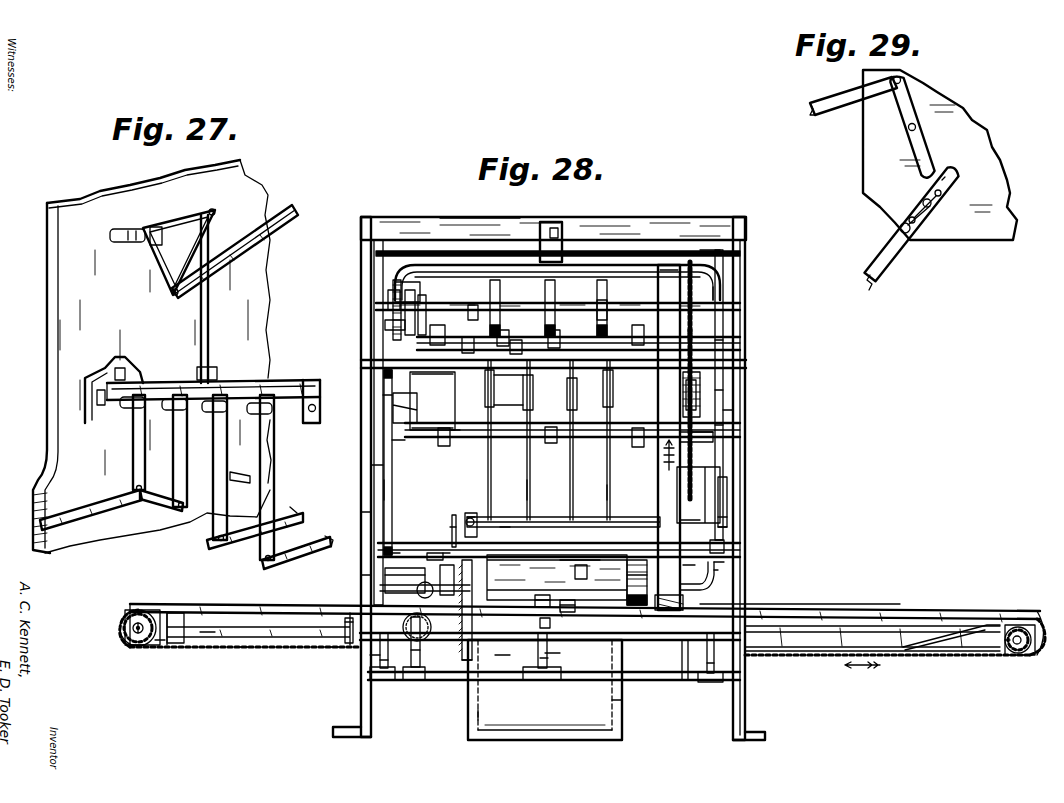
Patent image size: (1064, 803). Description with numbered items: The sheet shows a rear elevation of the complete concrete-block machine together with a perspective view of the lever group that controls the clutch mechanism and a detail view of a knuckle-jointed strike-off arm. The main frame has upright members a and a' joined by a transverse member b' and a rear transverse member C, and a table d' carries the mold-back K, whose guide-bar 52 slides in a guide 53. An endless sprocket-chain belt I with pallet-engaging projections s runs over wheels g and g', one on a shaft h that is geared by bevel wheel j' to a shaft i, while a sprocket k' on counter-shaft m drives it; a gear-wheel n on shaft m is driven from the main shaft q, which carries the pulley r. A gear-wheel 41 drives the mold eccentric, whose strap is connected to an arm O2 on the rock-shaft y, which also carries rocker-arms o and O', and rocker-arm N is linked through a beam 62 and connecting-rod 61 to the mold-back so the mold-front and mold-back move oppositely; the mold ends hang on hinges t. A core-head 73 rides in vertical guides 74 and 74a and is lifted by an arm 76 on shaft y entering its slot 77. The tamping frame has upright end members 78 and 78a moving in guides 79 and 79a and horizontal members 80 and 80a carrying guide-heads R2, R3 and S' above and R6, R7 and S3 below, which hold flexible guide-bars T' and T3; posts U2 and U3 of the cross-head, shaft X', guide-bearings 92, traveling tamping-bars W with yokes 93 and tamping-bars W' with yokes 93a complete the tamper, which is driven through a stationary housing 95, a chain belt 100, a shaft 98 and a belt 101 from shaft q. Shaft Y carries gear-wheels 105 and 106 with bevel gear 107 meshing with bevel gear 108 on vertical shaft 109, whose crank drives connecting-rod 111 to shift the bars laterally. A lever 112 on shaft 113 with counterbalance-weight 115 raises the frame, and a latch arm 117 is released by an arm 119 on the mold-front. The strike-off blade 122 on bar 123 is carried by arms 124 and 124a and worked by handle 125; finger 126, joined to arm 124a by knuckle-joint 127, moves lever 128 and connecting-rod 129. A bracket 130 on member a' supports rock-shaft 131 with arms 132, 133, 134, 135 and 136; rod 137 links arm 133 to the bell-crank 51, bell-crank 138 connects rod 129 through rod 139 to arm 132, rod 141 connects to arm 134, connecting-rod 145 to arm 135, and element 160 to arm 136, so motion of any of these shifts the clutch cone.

In FIG. 27, the upright main member a' is at (152, 356).
In FIG. 28, the upright main member a' is at (358, 348).
In FIG. 29, the upright main member a' is at (919, 155).
In FIG. 27, the bell-crank 138 is at (143, 257).
In FIG. 28, the bell-crank 138 is at (362, 517).
In FIG. 27, the connecting-rod 129 is at (282, 228).
In FIG. 28, the connecting-rod 129 is at (389, 492).
In FIG. 29, the connecting-rod 129 is at (840, 97).
In FIG. 27, the rod 139 is at (202, 313).
In FIG. 27, the arm 132 is at (204, 377).
In FIG. 27, the bracket 130 is at (285, 380).
In FIG. 28, the bracket 130 is at (398, 553).
In FIG. 27, the rock-shaft 131 is at (287, 423).
In FIG. 27, the arm 133 is at (137, 468).
In FIG. 28, the arm 133 is at (361, 580).
In FIG. 27, the connecting-rod 137 is at (63, 507).
In FIG. 27, the arm 134 is at (181, 501).
In FIG. 27, the rod 141 is at (240, 474).
In FIG. 27, the arm 135 is at (207, 532).
In FIG. 27, the connecting-rod 145 is at (290, 507).
In FIG. 27, the arm 136 is at (258, 556).
In FIG. 27, the connecting rod 160 is at (297, 553).
In FIG. 29, the lever 128 is at (917, 138).
In FIG. 29, the arm 124a is at (892, 262).
In FIG. 29, the finger 126 is at (945, 177).
In FIG. 29, the knuckle-joint 127 is at (922, 202).
In FIG. 28, the bevel gear-wheel 107 is at (400, 300).
In FIG. 28, the transverse member b' is at (480, 211).
In FIG. 28, the counterbalance-weight 115 is at (545, 222).
In FIG. 28, the yoke 93a is at (605, 292).
In FIG. 28, the belt 101 is at (670, 287).
In FIG. 28, the shaft 113 is at (707, 252).
In FIG. 28, the rotative shaft 98 is at (722, 270).
In FIG. 28, the connecting bevel gear-wheel 108 is at (392, 297).
In FIG. 28, the gear-wheel 105 is at (385, 328).
In FIG. 28, the connecting gear-wheel 106 is at (405, 305).
In FIG. 28, the rotative shaft Y is at (473, 307).
In FIG. 28, the guide-bar T3 is at (505, 340).
In FIG. 28, the guide-head S' is at (561, 318).
In FIG. 28, the guide-head R2 is at (640, 337).
In FIG. 28, the controlling lever 112 is at (465, 337).
In FIG. 28, the guide-bearings 92 is at (517, 343).
In FIG. 28, the chain belt 100 is at (693, 330).
In FIG. 28, the horizontal member 80 is at (713, 347).
In FIG. 28, the transverse member C is at (733, 367).
In FIG. 28, the housing 95 is at (700, 388).
In FIG. 28, the upright end member 78a is at (373, 372).
In FIG. 28, the vertical shaft 109 is at (383, 396).
In FIG. 28, the vertical guide 79a is at (377, 470).
In FIG. 28, the guide-head R3 is at (432, 382).
In FIG. 28, the post U3 is at (432, 409).
In FIG. 28, the rotative shaft X' is at (508, 384).
In FIG. 28, the yoke 93 is at (508, 415).
In FIG. 28, the connecting-rod 111 is at (406, 452).
In FIG. 28, the guide-head R7 is at (445, 442).
In FIG. 28, the guide-bar T' is at (459, 444).
In FIG. 28, the guide-head S3 is at (547, 443).
In FIG. 28, the traveling tamping-bar W is at (515, 490).
In FIG. 28, the handle 125 is at (453, 528).
In FIG. 28, the strike-off blade 122 is at (473, 517).
In FIG. 28, the connecting-rod 61 is at (447, 552).
In FIG. 28, the hinges t is at (503, 537).
In FIG. 28, the guide-head R6 is at (635, 450).
In FIG. 28, the tamping-bars W' is at (619, 493).
In FIG. 28, the horizontal member 80a is at (698, 437).
In FIG. 28, the bar 123 is at (690, 520).
In FIG. 28, the arm 124 is at (722, 517).
In FIG. 28, the arm 117 is at (720, 533).
In FIG. 28, the arm 119 is at (723, 548).
In FIG. 28, the rocker-arm N is at (725, 568).
In FIG. 28, the post U2 is at (713, 428).
In FIG. 28, the upright main member a is at (760, 446).
In FIG. 28, the upright end member 78 is at (718, 393).
In FIG. 28, the vertical guide 79 is at (725, 413).
In FIG. 28, the beam 62 is at (687, 567).
In FIG. 28, the bell-crank 51 is at (404, 578).
In FIG. 28, the mold-back K is at (580, 573).
In FIG. 28, the pulley r is at (637, 573).
In FIG. 28, the main shaft q is at (717, 583).
In FIG. 28, the table d' is at (545, 594).
In FIG. 28, the rotative shaft h is at (142, 623).
In FIG. 28, the sprocket-wheel k' is at (339, 603).
In FIG. 28, the bevel-gear wheel j' is at (132, 665).
In FIG. 28, the wheel g' is at (157, 662).
In FIG. 28, the rotative shaft i is at (208, 637).
In FIG. 28, the endless belt I is at (243, 652).
In FIG. 28, the projections s is at (330, 655).
In FIG. 28, the rocker-arm O' is at (355, 667).
In FIG. 28, the arm O2 is at (402, 680).
In FIG. 28, the gear-wheel 41 is at (432, 683).
In FIG. 28, the gear-wheel n is at (462, 667).
In FIG. 28, the vertical guide 74a is at (478, 713).
In FIG. 28, the guide-bar 52 is at (538, 605).
In FIG. 28, the guide 53 is at (557, 603).
In FIG. 28, the core-head 73 is at (500, 657).
In FIG. 28, the arm 76 is at (540, 657).
In FIG. 28, the slot 77 is at (553, 653).
In FIG. 28, the rock-shaft y is at (650, 682).
In FIG. 28, the counter-shaft m is at (690, 640).
In FIG. 28, the vertical guide 74 is at (615, 712).
In FIG. 28, the rocker-arm o is at (718, 663).
In FIG. 28, the wheel g is at (989, 645).